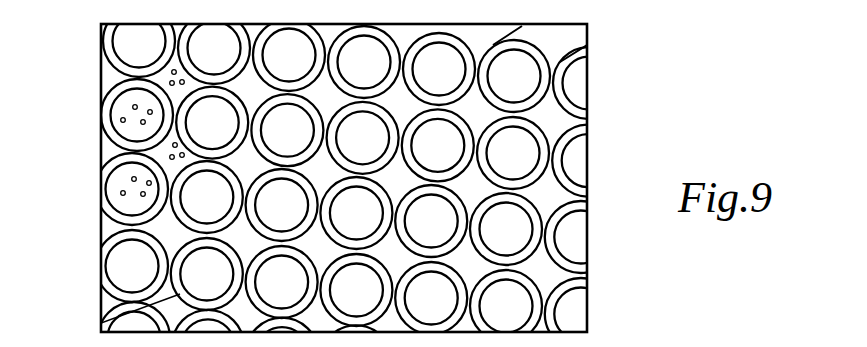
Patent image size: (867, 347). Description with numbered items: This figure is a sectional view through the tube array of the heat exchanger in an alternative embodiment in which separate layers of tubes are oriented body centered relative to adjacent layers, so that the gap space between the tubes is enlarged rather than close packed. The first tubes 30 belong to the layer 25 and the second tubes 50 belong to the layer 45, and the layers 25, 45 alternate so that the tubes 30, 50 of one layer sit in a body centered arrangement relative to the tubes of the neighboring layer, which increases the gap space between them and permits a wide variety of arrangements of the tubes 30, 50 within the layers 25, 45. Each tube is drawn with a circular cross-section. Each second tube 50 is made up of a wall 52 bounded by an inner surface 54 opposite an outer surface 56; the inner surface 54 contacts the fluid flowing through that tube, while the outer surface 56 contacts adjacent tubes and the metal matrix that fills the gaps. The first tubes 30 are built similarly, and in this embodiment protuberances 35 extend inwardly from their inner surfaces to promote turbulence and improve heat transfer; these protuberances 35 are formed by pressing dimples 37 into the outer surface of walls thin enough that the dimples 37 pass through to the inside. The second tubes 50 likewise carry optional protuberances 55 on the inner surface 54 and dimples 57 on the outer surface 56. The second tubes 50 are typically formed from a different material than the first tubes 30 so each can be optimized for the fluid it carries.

The layer 25 is at (591, 83).
The layer 45 is at (591, 160).
The first tube 30 is at (99, 34).
The second tube 50 is at (99, 108).
The wall 52 is at (112, 293).
The inner surface 54 is at (122, 264).
The protuberance 55 is at (121, 121).
The protuberance 35 is at (121, 194).
The outer surface 56 is at (473, 262).
The dimple 57 is at (170, 82).
The dimple 37 is at (170, 157).